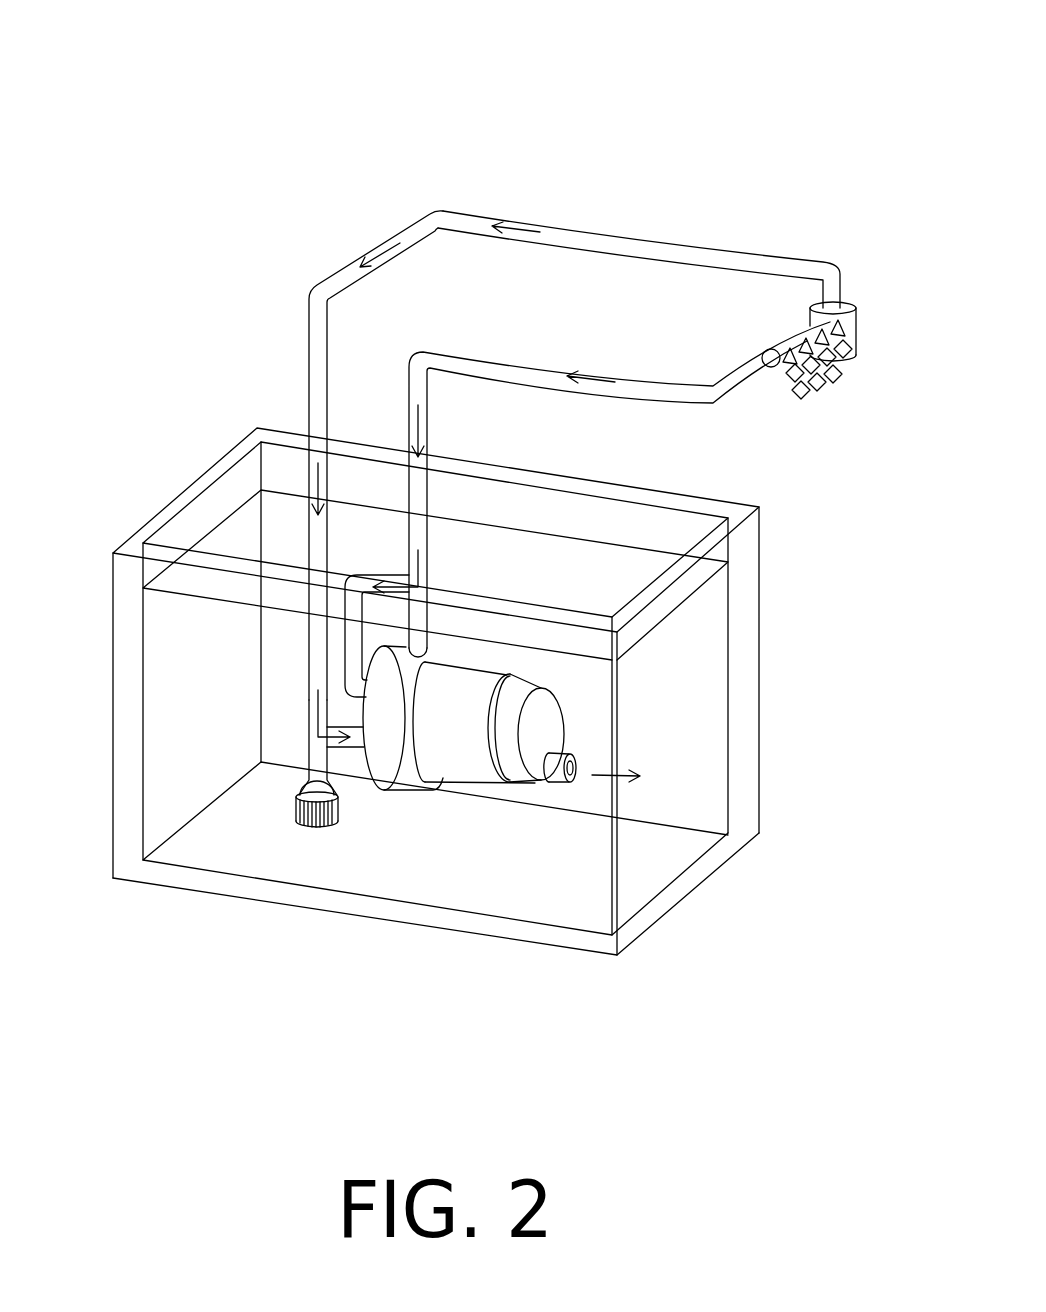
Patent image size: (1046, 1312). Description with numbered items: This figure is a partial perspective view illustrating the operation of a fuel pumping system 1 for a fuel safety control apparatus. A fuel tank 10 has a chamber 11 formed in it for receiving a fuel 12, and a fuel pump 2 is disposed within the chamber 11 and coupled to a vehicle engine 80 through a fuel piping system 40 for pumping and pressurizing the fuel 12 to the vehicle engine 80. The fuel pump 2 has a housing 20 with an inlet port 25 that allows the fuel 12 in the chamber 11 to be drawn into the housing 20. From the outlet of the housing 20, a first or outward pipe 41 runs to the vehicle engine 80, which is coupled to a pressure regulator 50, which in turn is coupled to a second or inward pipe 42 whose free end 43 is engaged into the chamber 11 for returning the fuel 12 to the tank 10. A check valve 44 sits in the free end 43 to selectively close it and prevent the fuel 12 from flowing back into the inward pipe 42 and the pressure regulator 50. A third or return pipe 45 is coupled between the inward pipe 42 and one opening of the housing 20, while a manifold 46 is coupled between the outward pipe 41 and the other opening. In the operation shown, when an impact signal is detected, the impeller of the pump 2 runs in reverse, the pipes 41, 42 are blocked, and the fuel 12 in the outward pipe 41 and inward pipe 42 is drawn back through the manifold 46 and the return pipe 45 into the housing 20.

The fuel pumping system 1 is at (452, 128).
The fuel pump 2 is at (563, 703).
The fuel tank 10 is at (762, 706).
The chamber 11 is at (203, 513).
The fuel 12 is at (573, 903).
The housing 20 is at (470, 765).
The inlet port 25 is at (575, 784).
The fuel piping system 40 is at (333, 268).
The first or outward pipe 41 is at (650, 393).
The second or inward pipe 42 is at (612, 233).
The free end 43 is at (307, 823).
The check valve 44 is at (317, 792).
The third or return pipe 45 is at (352, 747).
The manifold 46 is at (350, 646).
The pressure regulator 50 is at (850, 330).
The vehicle engine 80 is at (827, 387).